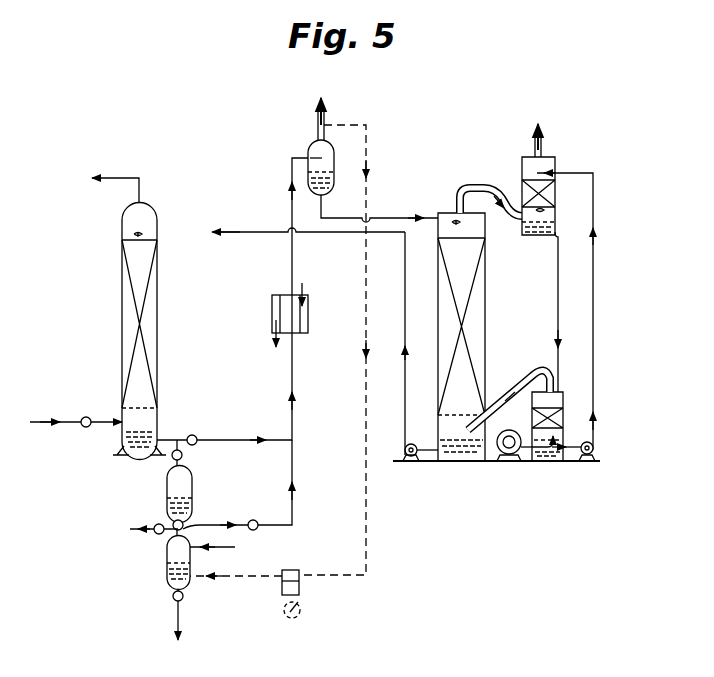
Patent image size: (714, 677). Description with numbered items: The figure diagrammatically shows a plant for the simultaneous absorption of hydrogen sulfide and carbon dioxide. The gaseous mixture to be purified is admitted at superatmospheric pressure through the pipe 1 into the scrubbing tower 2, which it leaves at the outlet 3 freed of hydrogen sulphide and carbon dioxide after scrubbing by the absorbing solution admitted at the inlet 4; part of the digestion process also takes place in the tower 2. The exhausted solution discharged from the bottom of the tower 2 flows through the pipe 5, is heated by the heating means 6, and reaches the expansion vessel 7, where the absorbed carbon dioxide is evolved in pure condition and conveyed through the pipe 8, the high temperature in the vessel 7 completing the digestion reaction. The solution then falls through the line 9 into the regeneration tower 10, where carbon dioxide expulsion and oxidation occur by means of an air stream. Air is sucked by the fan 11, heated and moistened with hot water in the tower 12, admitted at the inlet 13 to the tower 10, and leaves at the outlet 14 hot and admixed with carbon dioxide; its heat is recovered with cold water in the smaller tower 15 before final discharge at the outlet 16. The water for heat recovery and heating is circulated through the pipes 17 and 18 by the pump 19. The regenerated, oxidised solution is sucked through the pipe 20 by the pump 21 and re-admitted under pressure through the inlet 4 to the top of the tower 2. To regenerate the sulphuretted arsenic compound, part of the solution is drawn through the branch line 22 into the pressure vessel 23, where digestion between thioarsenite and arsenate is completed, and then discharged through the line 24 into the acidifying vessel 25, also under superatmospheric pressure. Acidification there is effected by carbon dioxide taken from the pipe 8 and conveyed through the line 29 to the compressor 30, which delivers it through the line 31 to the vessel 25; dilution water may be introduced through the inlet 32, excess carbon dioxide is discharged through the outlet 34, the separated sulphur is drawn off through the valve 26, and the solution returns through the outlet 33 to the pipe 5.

The pipe 1 is at (95, 421).
The scrubbing tower 2 is at (122, 325).
The gas outlet 3 is at (116, 178).
The solution inlet 4 is at (172, 232).
The pipe 5 is at (222, 440).
The heating means 6 is at (304, 310).
The expansion vessel 7 is at (314, 148).
The pipe 8 is at (326, 112).
The solution line 9 is at (410, 218).
The regeneration tower 10 is at (476, 336).
The fan 11 is at (507, 456).
The tower 12 is at (563, 413).
The air inlet 13 is at (520, 380).
The air outlet 14 is at (488, 190).
The smaller tower 15 is at (554, 195).
The outlet 16 is at (543, 140).
The pipe 17 is at (558, 331).
The pipe 18 is at (593, 310).
The pump 19 is at (590, 462).
The pipe 20 is at (420, 446).
The pump 21 is at (413, 462).
The branch line 22 is at (182, 457).
The pressure vessel 23 is at (192, 490).
The discharge line 24 is at (184, 521).
The acidifying vessel 25 is at (167, 560).
The valve 26 is at (172, 604).
The line 29 is at (368, 147).
The compressor 30 is at (294, 594).
The line 31 is at (246, 578).
The water inlet 32 is at (236, 548).
The outlet 33 is at (276, 526).
The excess carbon dioxide outlet 34 is at (159, 524).